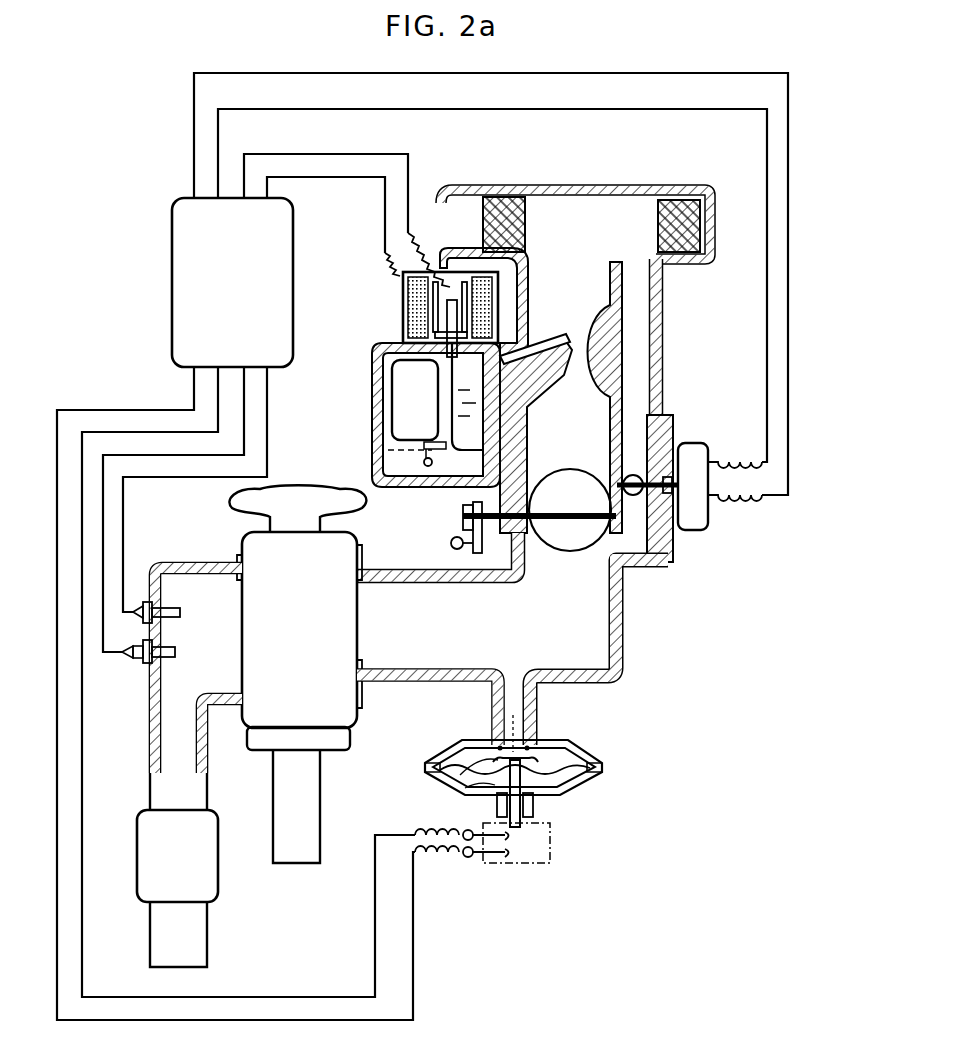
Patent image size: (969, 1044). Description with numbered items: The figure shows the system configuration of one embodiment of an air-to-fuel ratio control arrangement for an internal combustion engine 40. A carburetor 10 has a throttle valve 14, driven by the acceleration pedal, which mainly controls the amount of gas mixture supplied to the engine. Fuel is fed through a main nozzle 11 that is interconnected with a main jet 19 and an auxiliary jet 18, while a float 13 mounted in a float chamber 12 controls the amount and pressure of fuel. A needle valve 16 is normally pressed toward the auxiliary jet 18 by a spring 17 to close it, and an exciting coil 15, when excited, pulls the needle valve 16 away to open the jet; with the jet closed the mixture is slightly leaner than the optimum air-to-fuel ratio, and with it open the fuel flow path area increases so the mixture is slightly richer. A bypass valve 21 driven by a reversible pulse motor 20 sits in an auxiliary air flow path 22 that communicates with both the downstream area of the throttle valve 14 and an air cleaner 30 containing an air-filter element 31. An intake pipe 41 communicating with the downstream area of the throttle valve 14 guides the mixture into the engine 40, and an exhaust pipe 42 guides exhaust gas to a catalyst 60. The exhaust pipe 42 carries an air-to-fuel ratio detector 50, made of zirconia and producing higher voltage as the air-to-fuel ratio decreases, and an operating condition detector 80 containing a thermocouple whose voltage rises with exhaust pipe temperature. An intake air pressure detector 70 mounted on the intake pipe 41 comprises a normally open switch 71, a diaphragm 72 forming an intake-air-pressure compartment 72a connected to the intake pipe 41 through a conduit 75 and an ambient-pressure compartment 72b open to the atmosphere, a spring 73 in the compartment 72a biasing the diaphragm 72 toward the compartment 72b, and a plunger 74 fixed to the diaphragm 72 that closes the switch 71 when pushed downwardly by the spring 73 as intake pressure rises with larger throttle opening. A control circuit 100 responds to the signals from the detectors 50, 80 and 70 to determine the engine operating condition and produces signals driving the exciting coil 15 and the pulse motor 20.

The carburetor 10 is at (372, 366).
The main nozzle 11 is at (560, 345).
The float chamber 12 is at (392, 402).
The float 13 is at (400, 418).
The throttle valve 14 is at (568, 492).
The exciting coil 15 is at (410, 292).
The needle valve 16 is at (410, 338).
The spring 17 is at (430, 305).
The auxiliary jet 18 is at (450, 445).
The main jet 19 is at (426, 467).
The reversible pulse motor 20 is at (694, 531).
The bypass valve 21 is at (632, 474).
The auxiliary air flow path 22 is at (637, 309).
The air cleaner 30 is at (612, 188).
The air-filter element 31 is at (700, 227).
The internal combustion engine 40 is at (350, 722).
The intake pipe 41 is at (621, 627).
The exhaust pipe 42 is at (150, 703).
The air-to-fuel ratio detector 50 is at (165, 655).
The catalyst 60 is at (218, 876).
The intake air pressure detector 70 is at (590, 760).
The normally open switch 71 is at (550, 852).
The diaphragm 72 is at (562, 753).
The intake-air-pressure compartment 72a is at (468, 756).
The ambient-pressure compartment 72b is at (472, 795).
The spring 73 is at (512, 730).
The plunger 74 is at (526, 805).
The conduit 75 is at (537, 730).
The operating condition detector 80 is at (163, 610).
The control circuit 100 is at (172, 229).